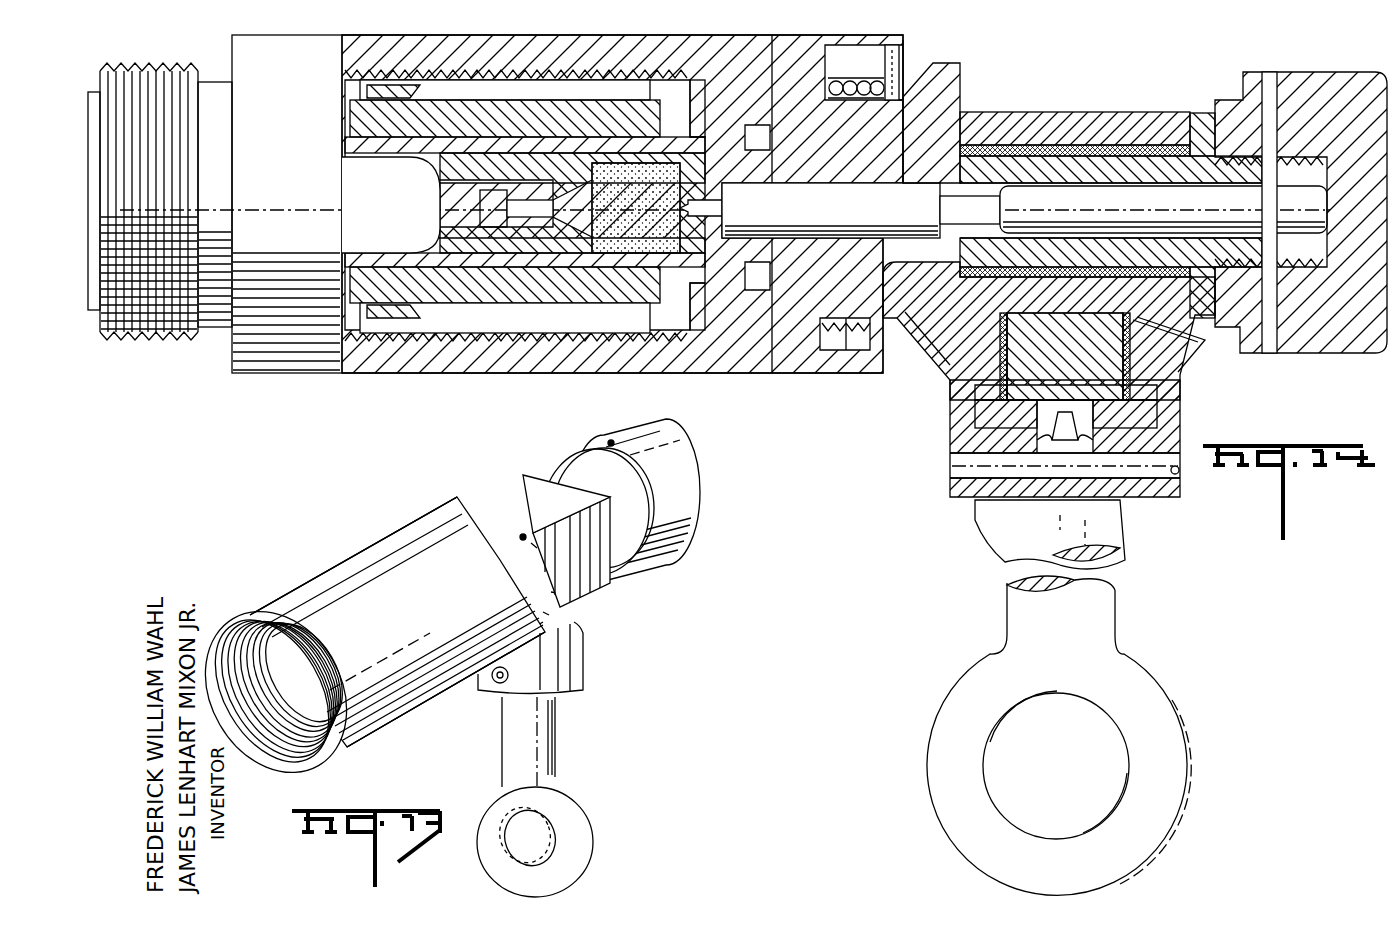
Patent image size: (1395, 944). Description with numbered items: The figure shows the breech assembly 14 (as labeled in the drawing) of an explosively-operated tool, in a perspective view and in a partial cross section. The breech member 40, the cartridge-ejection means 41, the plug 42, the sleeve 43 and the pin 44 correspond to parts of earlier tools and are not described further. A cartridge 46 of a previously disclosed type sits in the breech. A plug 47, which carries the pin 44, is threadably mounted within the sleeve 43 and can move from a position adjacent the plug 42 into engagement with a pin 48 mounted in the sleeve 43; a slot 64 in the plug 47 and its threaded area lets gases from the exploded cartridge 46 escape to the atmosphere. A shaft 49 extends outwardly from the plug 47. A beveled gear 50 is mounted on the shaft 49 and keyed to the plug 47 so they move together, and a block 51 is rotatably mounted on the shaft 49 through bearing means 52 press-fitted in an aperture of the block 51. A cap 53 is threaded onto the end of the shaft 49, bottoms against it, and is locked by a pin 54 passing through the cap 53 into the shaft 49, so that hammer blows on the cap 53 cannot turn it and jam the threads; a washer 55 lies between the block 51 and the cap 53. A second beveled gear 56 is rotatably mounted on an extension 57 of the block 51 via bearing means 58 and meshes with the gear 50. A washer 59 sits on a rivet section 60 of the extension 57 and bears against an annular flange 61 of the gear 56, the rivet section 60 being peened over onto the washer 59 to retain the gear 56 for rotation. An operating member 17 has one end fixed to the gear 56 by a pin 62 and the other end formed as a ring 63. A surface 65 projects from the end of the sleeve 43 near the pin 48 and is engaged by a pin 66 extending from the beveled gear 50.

In FIG. 14, the dispensing device 14 is at (775, 383).
In FIG. 13, the dispensing device 14 is at (394, 508).
In FIG. 14, the operating member 17 is at (1020, 536).
In FIG. 13, the operating member 17 is at (550, 748).
In FIG. 14, the breech member 40 is at (216, 90).
In FIG. 14, the cartridge-ejection means 41 is at (490, 342).
In FIG. 14, the plug 42 is at (700, 336).
In FIG. 14, the sleeve 43 is at (712, 372).
In FIG. 13, the sleeve 43 is at (300, 582).
In FIG. 14, the pin 44 is at (1024, 210).
In FIG. 14, the cartridge 46 is at (590, 272).
In FIG. 14, the plug 47 is at (850, 325).
In FIG. 14, the pin 48 is at (858, 82).
In FIG. 13, the pin 48 is at (523, 537).
In FIG. 14, the shaft 49 is at (1002, 150).
In FIG. 14, the beveled gear 50 is at (962, 80).
In FIG. 14, the block 51 is at (1062, 110).
In FIG. 13, the block 51 is at (592, 586).
In FIG. 14, the bearing means 52 is at (1086, 146).
In FIG. 14, the cap 53 is at (1330, 85).
In FIG. 13, the cap 53 is at (690, 495).
In FIG. 14, the pin 54 is at (1270, 75).
In FIG. 13, the pin 54 is at (611, 440).
In FIG. 14, the washer 55 is at (1200, 112).
In FIG. 13, the washer 55 is at (627, 548).
In FIG. 14, the beveled gear 56 is at (1182, 370).
In FIG. 13, the beveled gear 56 is at (570, 660).
In FIG. 14, the extension 57 is at (1027, 374).
In FIG. 14, the bearing means 58 is at (1127, 385).
In FIG. 14, the washer 59 is at (1150, 418).
In FIG. 14, the rivet section 60 is at (1040, 443).
In FIG. 14, the annular flange 61 is at (1033, 427).
In FIG. 14, the pin 62 is at (1172, 470).
In FIG. 13, the pin 62 is at (494, 684).
In FIG. 14, the ring 63 is at (948, 740).
In FIG. 13, the ring 63 is at (585, 842).
In FIG. 14, the slot 64 is at (813, 350).
In FIG. 14, the surface 65 is at (897, 48).
In FIG. 14, the pin 66 is at (906, 74).
In FIG. 13, the pin 66 is at (537, 537).